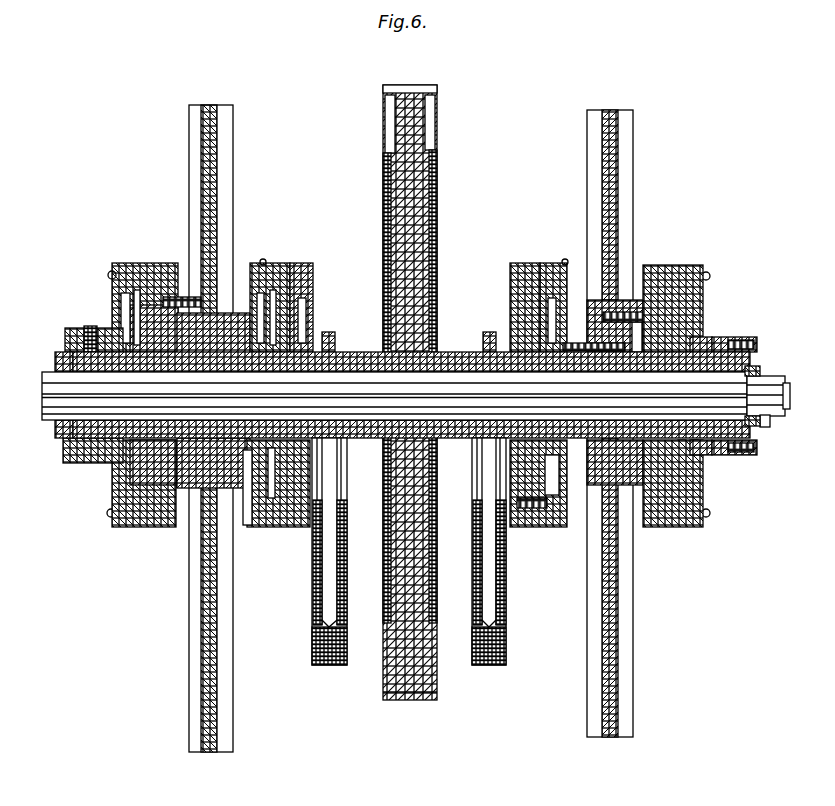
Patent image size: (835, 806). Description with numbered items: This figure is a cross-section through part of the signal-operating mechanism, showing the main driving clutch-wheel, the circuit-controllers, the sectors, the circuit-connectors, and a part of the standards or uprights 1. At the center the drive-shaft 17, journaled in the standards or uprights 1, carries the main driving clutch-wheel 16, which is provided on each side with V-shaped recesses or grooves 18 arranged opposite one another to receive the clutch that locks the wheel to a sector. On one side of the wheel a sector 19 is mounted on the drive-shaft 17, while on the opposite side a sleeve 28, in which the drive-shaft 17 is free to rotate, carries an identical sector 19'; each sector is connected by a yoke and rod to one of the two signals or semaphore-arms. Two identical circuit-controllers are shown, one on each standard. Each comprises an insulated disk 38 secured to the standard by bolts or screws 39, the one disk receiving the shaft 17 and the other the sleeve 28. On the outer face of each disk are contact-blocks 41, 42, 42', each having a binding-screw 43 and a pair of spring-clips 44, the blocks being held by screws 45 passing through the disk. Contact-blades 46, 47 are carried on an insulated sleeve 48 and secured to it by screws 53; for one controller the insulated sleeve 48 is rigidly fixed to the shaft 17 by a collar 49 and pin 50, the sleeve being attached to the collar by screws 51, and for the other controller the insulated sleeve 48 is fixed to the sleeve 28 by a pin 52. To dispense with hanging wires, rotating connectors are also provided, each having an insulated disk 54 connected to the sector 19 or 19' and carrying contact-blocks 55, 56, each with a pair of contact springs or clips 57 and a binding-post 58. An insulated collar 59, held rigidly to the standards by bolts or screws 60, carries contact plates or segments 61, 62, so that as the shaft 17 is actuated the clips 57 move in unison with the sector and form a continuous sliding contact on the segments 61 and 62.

The standards or uprights 1 is at (190, 150).
The main driving clutch-wheel 16 is at (384, 155).
The drive-shaft 17 is at (365, 372).
The recesses or grooves 18 is at (385, 125).
The sector 19 is at (489, 566).
The sector 19' is at (327, 566).
The sleeve 28 is at (56, 352).
The insulated disk 38 is at (168, 528).
The bolts or screws 39 is at (186, 312).
The contact-block 41 is at (134, 263).
The contact-block 42 is at (675, 293).
The contact-block 42' is at (410, 499).
The binding-screw 43 is at (108, 274).
The spring-clips 44 is at (123, 296).
The screws 45 is at (645, 278).
The contact-blade 46 is at (136, 312).
The contact-blade 47 is at (134, 470).
The insulated sleeve 48 is at (735, 455).
The collar 49 is at (752, 428).
The pin 50 is at (767, 425).
The screws 51 is at (757, 345).
The pin 52 is at (112, 330).
The screws 53 is at (712, 332).
The insulated disk 54 is at (306, 263).
The contact-block 55 is at (278, 528).
The contact-block 56 is at (268, 263).
The contact springs or clips 57 is at (306, 300).
The binding-post 58 is at (265, 258).
The insulated collar 59 is at (236, 312).
The bolts or screws 60 is at (580, 343).
The contact plate or segment 61 is at (328, 332).
The contact plate or segment 62 is at (247, 470).